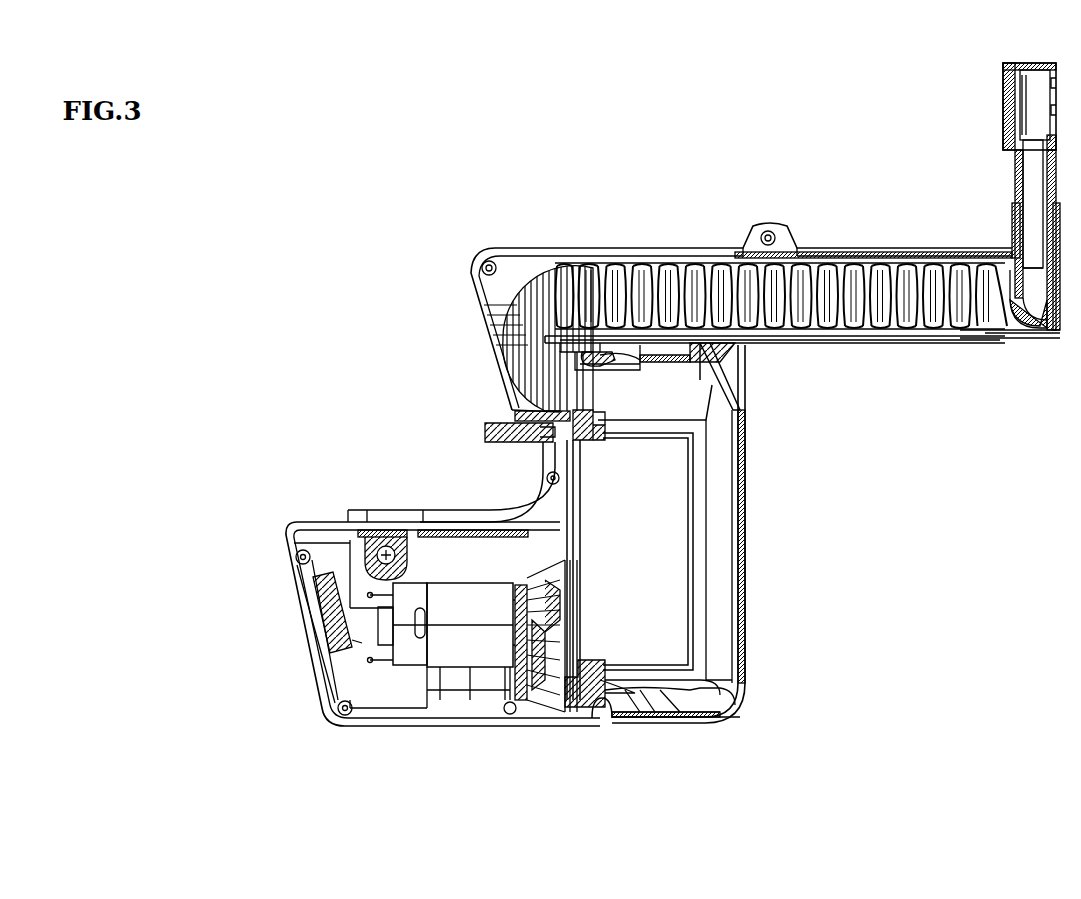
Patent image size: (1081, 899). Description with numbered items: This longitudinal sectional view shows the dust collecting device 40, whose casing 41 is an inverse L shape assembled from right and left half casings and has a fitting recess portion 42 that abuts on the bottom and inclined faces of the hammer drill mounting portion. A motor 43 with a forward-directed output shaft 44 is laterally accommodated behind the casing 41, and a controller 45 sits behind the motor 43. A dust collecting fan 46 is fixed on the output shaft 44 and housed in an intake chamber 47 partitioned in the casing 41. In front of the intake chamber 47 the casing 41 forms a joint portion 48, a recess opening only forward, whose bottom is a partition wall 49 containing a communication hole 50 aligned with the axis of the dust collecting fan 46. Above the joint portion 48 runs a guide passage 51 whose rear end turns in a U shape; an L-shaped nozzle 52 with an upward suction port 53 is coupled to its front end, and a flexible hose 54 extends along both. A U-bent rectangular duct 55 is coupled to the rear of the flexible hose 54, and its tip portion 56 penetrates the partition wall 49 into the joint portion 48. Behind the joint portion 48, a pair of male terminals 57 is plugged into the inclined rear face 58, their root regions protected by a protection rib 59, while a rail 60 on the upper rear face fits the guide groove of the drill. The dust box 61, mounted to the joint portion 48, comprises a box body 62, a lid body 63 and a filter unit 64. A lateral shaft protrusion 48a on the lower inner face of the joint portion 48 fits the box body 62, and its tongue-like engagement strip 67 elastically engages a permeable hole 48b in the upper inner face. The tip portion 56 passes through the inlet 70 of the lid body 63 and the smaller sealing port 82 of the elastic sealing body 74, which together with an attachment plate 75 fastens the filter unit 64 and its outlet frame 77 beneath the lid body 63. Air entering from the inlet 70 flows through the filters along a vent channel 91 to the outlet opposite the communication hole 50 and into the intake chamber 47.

The dust collecting device 40 is at (678, 247).
The casing 41 is at (582, 247).
The fitting recess portion 42 is at (470, 325).
The motor 43 is at (465, 680).
The output shaft 44 is at (560, 612).
The controller 45 is at (325, 630).
The dust collecting fan 46 is at (541, 705).
The intake chamber 47 is at (582, 703).
The joint portion 48 is at (630, 338).
The lateral shaft protrusion 48a is at (604, 715).
The permeable hole 48b is at (708, 346).
The partition wall 49 is at (582, 550).
The communication hole 50 is at (580, 634).
The guide passage 51 is at (506, 280).
The nozzle 52 is at (964, 258).
The suction port 53 is at (1037, 85).
The flexible hose 54 is at (830, 285).
The duct 55 is at (522, 362).
The tip portion 56 is at (594, 392).
The male terminals 57 is at (485, 431).
The inclined rear face 58 is at (513, 395).
The protection rib 59 is at (522, 442).
The rail 60 is at (420, 509).
The dust box 61 is at (748, 460).
The box body 62 is at (747, 632).
The lid body 63 is at (515, 412).
The filter unit 64 is at (700, 548).
The engagement strip 67 is at (728, 360).
The inlet 70 is at (575, 355).
The sealing body 74 is at (598, 352).
The attachment plate 75 is at (670, 712).
The outlet frame 77 is at (592, 440).
The sealing port 82 is at (600, 418).
The vent channel 91 is at (720, 510).